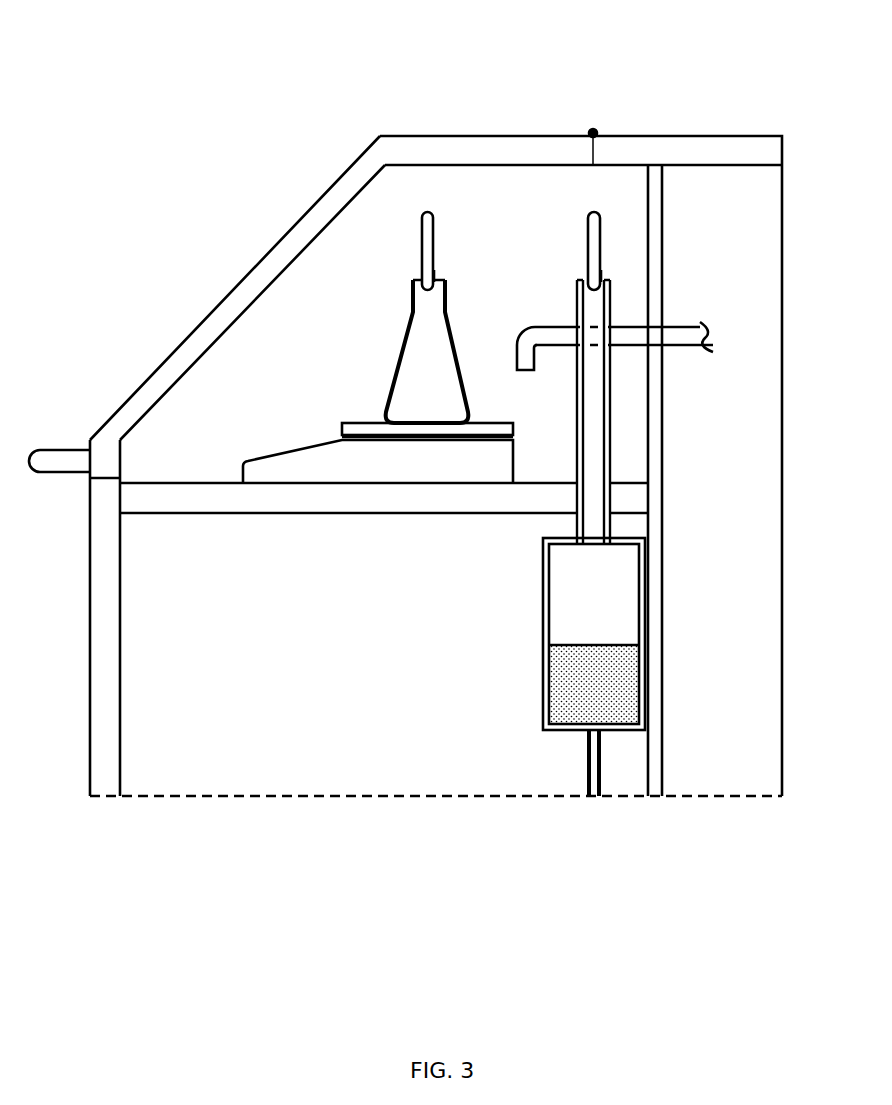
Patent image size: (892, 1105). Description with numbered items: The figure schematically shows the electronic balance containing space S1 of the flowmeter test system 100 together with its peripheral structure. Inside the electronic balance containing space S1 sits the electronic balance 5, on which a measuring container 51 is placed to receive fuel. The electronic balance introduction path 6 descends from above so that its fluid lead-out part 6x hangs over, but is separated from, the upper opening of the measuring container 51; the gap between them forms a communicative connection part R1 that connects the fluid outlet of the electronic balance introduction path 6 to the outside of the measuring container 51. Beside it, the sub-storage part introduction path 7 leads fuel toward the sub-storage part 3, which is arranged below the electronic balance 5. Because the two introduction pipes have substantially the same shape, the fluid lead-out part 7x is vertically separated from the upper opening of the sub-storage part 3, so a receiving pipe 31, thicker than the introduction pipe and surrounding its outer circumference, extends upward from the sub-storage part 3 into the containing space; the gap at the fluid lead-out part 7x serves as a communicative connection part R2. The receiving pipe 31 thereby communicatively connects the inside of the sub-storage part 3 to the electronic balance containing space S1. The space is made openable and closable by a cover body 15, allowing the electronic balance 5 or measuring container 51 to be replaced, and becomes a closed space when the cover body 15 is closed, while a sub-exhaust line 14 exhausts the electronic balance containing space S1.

The flowmeter test system 100 is at (250, 82).
The cover body 15 is at (236, 289).
The electronic balance 5 is at (310, 443).
The measuring container 51 is at (400, 344).
The electronic balance introduction path 6 is at (422, 222).
The fluid lead-out part 6x is at (413, 285).
The communicative connection part R1 is at (442, 273).
The sub-storage part introduction path 7 is at (588, 222).
The fluid lead-out part 7x is at (577, 284).
The communicative connection part R2 is at (608, 275).
The sub-exhaust line 14 is at (561, 347).
The receiving pipe 31 is at (612, 408).
The sub-storage part 3 is at (543, 588).
The electronic balance containing space S1 is at (332, 306).